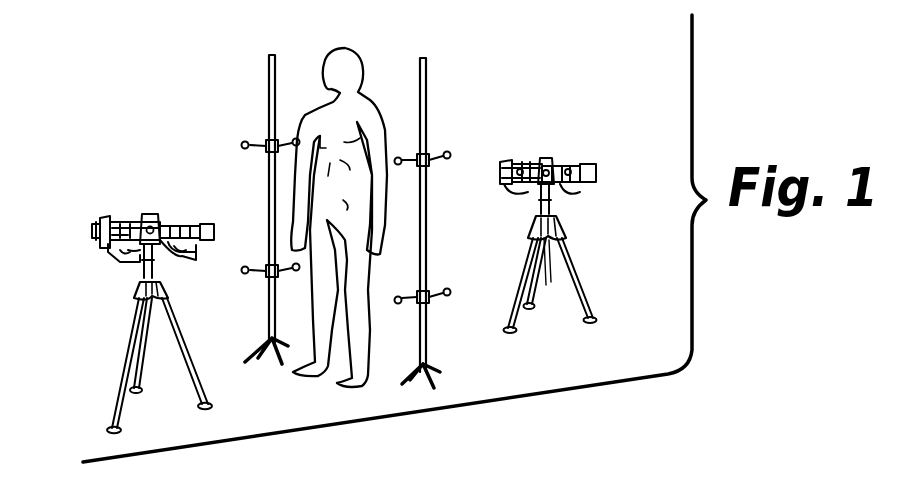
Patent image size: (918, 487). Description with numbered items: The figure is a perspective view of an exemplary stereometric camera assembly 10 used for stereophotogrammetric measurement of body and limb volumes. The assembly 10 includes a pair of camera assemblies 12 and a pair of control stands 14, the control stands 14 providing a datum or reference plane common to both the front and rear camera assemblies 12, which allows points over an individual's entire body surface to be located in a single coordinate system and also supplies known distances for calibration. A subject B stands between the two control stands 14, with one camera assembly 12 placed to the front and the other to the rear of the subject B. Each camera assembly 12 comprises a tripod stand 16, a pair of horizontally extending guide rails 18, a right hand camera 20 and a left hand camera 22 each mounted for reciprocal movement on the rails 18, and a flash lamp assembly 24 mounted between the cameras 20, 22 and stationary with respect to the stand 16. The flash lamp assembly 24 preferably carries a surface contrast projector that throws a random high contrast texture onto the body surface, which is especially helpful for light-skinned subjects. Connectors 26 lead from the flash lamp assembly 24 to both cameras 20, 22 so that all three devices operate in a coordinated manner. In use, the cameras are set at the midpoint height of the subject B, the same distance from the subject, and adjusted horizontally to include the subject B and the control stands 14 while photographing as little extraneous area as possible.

The stereometric camera assembly 10 is at (168, 64).
The camera assembly 12 is at (170, 168).
The control stand 14 is at (276, 58).
The tripod stand 16 is at (134, 300).
The guide rails 18 is at (178, 254).
The right hand camera 20 is at (182, 232).
The left hand camera 22 is at (100, 230).
The flash lamp assembly 24 is at (152, 214).
The connectors 26 is at (124, 252).
The subject B is at (344, 37).